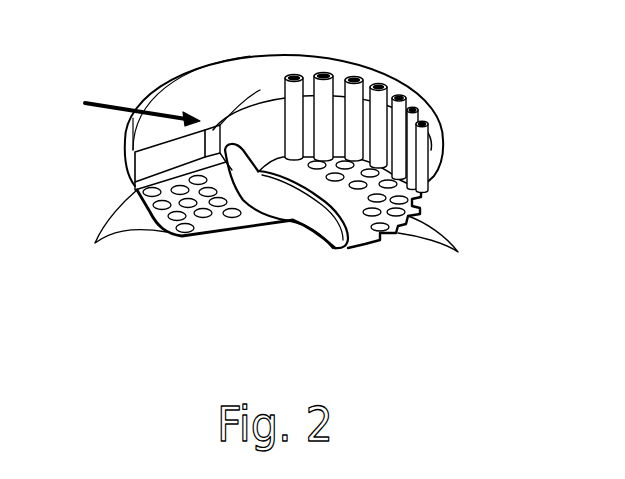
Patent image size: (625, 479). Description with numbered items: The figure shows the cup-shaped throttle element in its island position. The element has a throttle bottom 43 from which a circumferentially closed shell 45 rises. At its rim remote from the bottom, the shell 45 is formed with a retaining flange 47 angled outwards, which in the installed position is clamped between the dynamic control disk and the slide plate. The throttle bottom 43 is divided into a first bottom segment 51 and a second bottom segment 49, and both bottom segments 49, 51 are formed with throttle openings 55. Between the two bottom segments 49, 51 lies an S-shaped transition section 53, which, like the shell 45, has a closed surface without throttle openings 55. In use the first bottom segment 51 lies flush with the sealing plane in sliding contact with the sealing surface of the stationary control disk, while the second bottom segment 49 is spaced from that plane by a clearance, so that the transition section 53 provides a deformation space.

The throttle bottom 43 is at (353, 338).
The shell 45 is at (401, 147).
The retaining flange 47 is at (402, 81).
The second bottom segment 49 is at (198, 229).
The first bottom segment 51 is at (357, 230).
The S-shaped transition section 53 is at (309, 208).
The throttle openings 55 is at (281, 235).